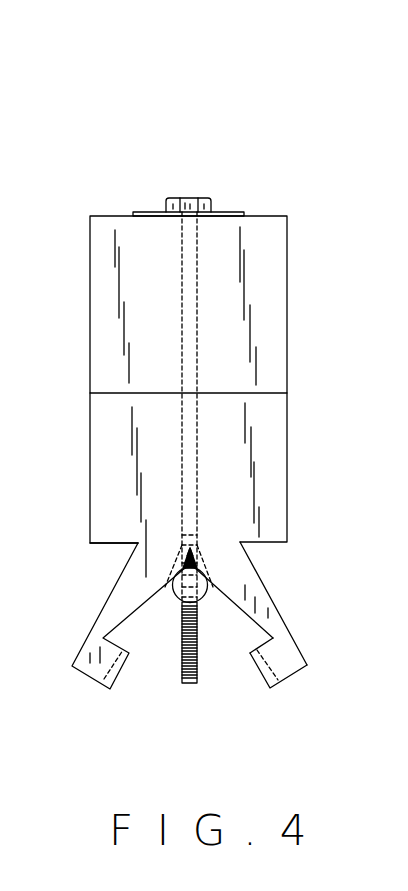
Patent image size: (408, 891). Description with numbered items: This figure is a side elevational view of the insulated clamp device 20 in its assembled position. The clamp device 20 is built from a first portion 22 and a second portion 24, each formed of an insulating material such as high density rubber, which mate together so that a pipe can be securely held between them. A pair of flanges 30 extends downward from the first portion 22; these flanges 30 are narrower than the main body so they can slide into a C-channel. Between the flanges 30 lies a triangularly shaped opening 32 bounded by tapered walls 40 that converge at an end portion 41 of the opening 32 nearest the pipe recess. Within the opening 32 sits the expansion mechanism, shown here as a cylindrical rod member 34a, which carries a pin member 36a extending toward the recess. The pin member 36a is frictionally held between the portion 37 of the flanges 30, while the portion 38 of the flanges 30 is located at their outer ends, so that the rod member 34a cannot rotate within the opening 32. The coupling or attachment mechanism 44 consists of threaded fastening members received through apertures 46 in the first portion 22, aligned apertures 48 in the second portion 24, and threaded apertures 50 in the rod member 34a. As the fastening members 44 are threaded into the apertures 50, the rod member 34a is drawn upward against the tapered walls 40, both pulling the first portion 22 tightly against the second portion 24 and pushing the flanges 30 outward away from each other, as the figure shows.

The insulated clamp device 20 is at (183, 163).
The first portion 22 is at (237, 495).
The second portion 24 is at (212, 312).
The flanges 30 is at (196, 631).
The triangularly shaped opening 32 is at (277, 625).
The cylindrical rod member 34a is at (265, 624).
The pin member 36a is at (200, 552).
The portion of the flanges 37 is at (142, 561).
The portion of the flanges 38 is at (280, 670).
The tapered walls 40 is at (250, 650).
The end portion 41 is at (200, 557).
The coupling or attachment mechanism 44 is at (210, 200).
The apertures 46 is at (197, 438).
The apertures 48 is at (180, 283).
The apertures 50 is at (178, 602).